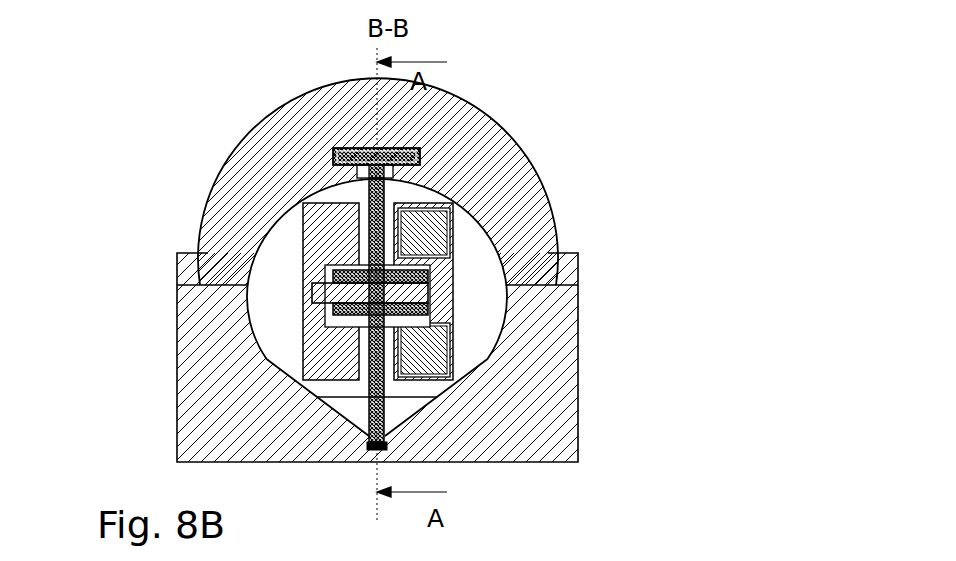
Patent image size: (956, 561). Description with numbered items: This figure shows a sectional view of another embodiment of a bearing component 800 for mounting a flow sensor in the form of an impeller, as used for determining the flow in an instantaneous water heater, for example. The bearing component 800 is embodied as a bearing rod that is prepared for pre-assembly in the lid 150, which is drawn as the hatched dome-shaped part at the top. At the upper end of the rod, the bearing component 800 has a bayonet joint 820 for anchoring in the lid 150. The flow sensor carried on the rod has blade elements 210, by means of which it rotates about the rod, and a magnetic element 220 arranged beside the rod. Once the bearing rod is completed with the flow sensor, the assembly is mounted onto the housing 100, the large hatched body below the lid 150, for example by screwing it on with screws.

The housing 100 is at (527, 395).
The lid 150 is at (522, 258).
The blade elements 210 is at (337, 252).
The magnetic element 220 is at (427, 257).
The bearing component 800 is at (484, 258).
The bayonet joint 820 is at (421, 152).